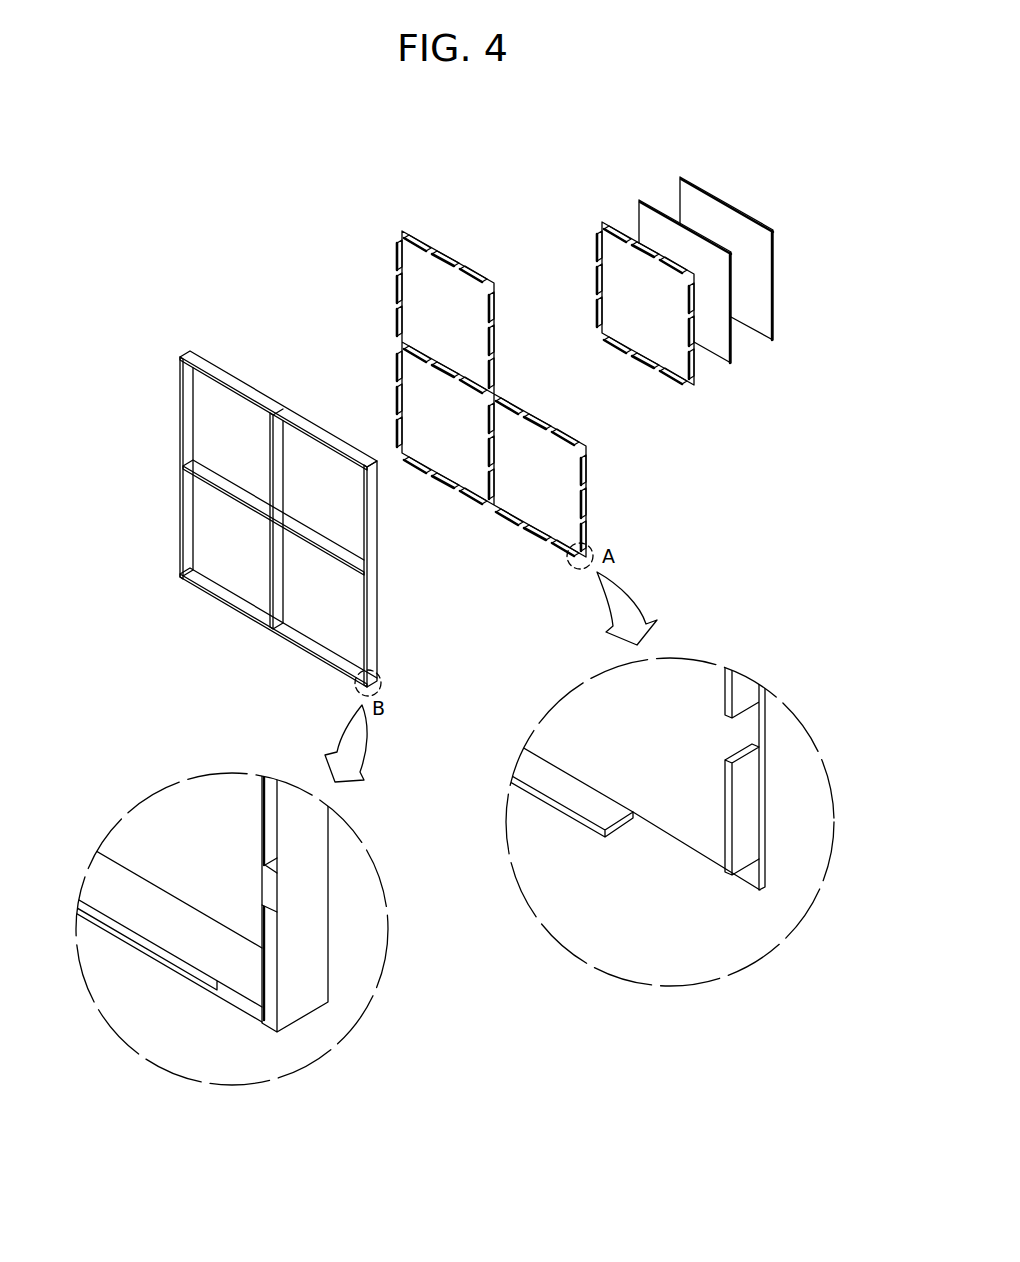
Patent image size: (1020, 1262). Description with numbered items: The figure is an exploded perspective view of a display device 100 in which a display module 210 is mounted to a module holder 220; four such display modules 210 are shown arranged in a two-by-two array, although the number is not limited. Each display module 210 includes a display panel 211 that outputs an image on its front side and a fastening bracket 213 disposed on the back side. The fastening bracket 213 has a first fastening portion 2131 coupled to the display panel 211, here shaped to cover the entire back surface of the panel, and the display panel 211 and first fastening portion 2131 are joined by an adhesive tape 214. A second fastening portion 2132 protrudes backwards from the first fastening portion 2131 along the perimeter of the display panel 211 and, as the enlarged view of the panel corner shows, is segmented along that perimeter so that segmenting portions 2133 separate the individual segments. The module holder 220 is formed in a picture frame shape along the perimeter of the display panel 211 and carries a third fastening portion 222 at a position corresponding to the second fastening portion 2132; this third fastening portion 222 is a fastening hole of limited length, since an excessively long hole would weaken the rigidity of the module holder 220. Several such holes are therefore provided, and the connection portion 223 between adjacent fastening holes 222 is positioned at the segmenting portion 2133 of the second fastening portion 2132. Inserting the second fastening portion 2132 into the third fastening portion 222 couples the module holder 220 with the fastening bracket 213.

The display device 100 is at (69, 219).
The display module 210 is at (583, 227).
The display panel 211 is at (457, 467).
The fastening bracket 213 is at (673, 365).
The adhesive tape 214 is at (712, 330).
The module holder 220 is at (222, 592).
The third fastening portion 222 is at (270, 985).
The connection portion 223 is at (270, 892).
The first fastening portion 2131 is at (678, 820).
The second fastening portion 2132 is at (740, 815).
The segmenting portion 2133 is at (763, 720).